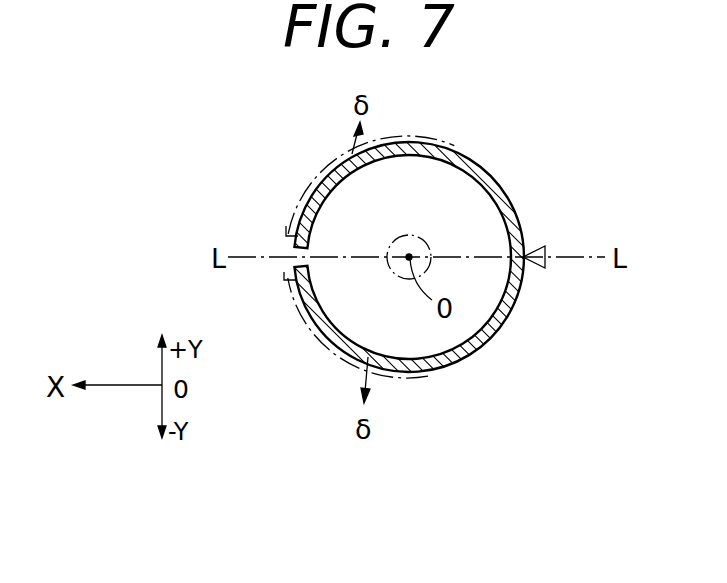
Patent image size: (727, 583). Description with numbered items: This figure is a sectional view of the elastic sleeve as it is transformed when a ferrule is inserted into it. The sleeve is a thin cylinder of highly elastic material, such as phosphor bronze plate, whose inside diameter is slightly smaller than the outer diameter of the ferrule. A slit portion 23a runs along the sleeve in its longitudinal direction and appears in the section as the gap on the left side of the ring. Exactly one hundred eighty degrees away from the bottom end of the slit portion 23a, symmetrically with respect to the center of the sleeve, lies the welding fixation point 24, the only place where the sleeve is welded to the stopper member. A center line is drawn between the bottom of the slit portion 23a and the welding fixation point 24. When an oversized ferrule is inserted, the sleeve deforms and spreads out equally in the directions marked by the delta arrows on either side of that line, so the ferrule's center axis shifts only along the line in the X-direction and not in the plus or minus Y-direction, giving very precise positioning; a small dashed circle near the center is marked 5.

The optical axis / center member 5 is at (421, 239).
The welding fixation point 24 is at (535, 270).
The slit portion 23a is at (287, 264).